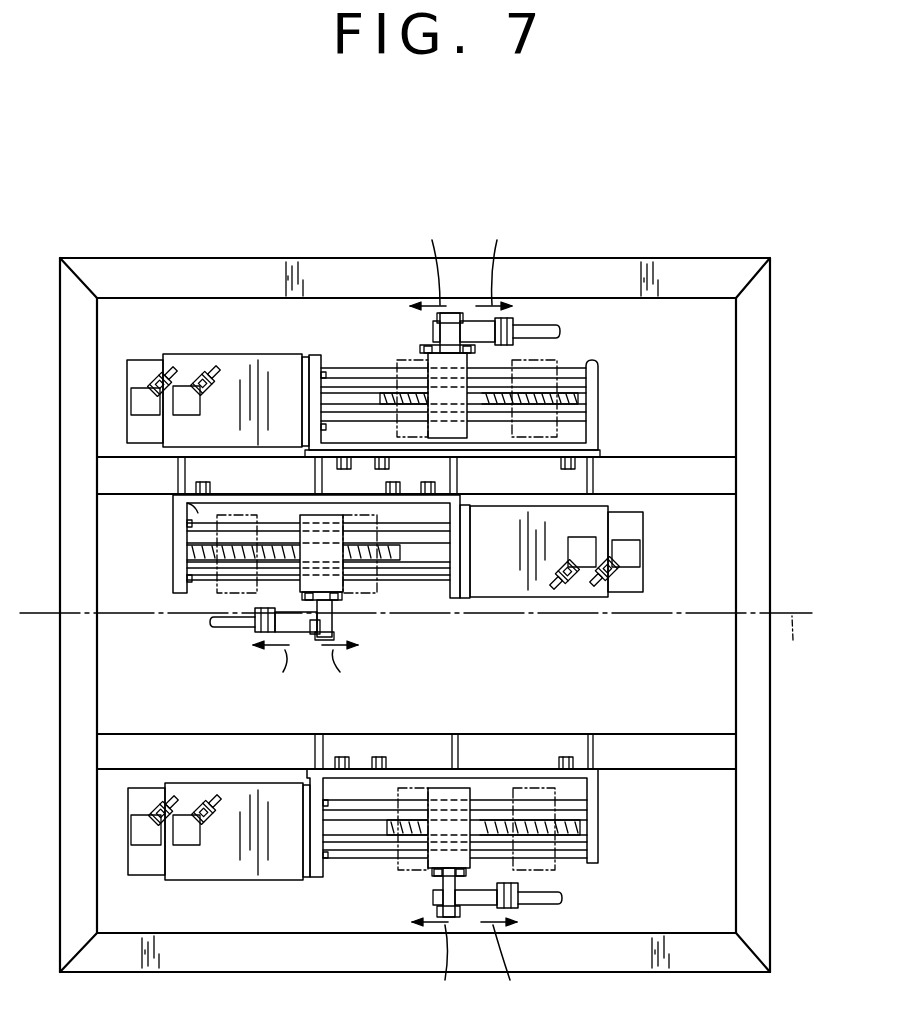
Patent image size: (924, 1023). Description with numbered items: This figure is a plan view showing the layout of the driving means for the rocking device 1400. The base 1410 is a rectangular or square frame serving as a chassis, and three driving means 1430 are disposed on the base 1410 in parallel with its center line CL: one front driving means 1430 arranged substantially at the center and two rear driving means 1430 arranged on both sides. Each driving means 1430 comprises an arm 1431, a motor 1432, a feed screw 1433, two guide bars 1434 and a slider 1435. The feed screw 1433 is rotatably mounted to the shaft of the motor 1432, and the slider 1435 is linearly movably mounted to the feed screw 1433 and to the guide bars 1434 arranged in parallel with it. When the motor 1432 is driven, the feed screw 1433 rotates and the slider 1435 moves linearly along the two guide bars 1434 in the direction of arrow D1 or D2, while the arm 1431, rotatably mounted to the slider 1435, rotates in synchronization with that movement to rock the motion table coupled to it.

The rocking device 1400 is at (178, 240).
The base 1410 is at (762, 512).
The driving means 1430 is at (296, 326).
The arm 1431 is at (545, 325).
The motor 1432 is at (243, 360).
The feed screw 1433 is at (398, 383).
The guide bars 1434 is at (583, 410).
The slider 1435 is at (432, 368).